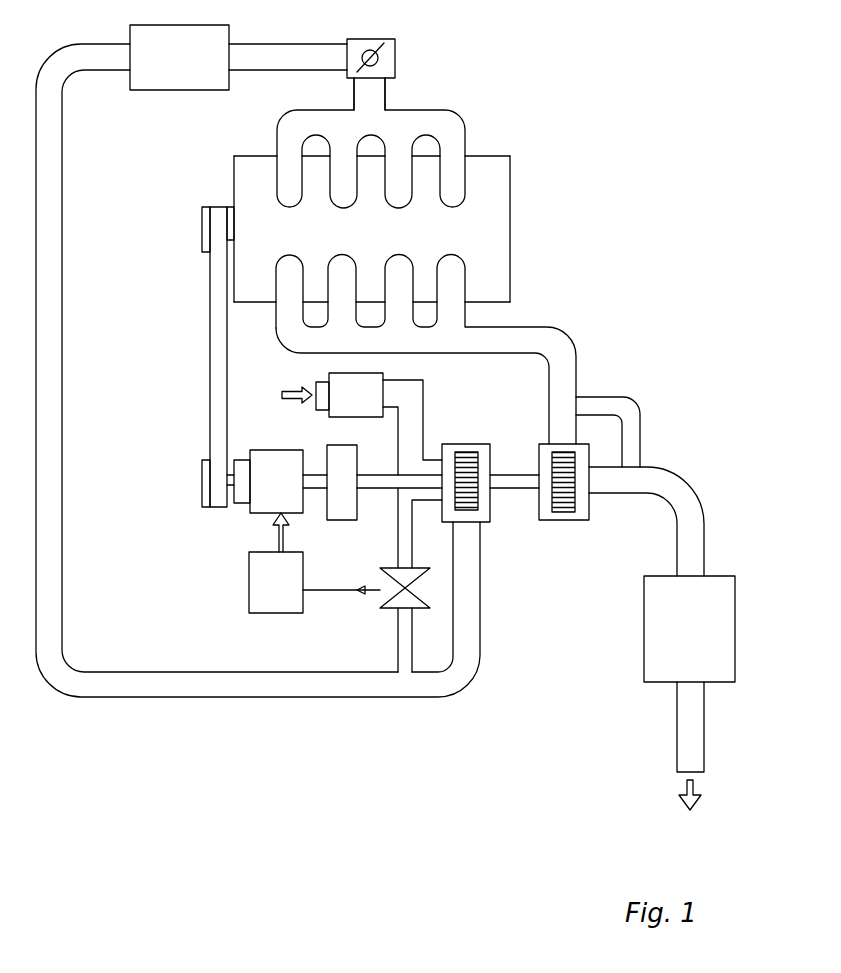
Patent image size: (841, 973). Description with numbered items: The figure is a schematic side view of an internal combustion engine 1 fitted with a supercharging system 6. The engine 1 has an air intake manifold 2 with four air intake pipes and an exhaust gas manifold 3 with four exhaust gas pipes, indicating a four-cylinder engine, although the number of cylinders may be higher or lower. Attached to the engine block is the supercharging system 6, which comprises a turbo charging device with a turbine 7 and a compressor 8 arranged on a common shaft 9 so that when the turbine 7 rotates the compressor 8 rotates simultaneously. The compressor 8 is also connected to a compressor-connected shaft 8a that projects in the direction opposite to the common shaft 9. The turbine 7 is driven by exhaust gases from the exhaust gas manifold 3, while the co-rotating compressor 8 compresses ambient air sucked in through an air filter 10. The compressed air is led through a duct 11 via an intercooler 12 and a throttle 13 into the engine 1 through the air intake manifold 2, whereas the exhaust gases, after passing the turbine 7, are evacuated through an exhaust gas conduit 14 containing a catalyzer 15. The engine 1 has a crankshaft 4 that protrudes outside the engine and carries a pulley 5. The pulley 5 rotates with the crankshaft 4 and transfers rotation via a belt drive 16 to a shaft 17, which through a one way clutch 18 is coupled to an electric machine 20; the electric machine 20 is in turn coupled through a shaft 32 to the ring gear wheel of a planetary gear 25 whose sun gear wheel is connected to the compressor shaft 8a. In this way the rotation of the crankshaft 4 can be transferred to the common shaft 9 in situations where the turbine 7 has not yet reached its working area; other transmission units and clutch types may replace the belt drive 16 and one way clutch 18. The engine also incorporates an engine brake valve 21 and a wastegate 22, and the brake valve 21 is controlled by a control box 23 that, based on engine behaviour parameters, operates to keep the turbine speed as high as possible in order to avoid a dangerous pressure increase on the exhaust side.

The internal combustion engine 1 is at (606, 118).
The air intake manifold 2 is at (453, 130).
The exhaust gas manifold 3 is at (457, 313).
The crankshaft 4 is at (228, 216).
The pulley 5 is at (202, 225).
The supercharging system 6 is at (539, 515).
The turbine 7 is at (584, 509).
The compressor 8 is at (485, 522).
The compressor-connected shaft 8a is at (378, 478).
The common shaft 9 is at (520, 477).
The air filter 10 is at (343, 410).
The duct 11 is at (50, 324).
The intercooler 12 is at (166, 70).
The throttle 13 is at (393, 62).
The exhaust gas conduit 14 is at (683, 735).
The catalyzer 15 is at (677, 646).
The belt drive 16 is at (213, 390).
The shaft 17 is at (202, 483).
The one way clutch 18 is at (243, 497).
The electric machine 20 is at (263, 496).
The engine brake valve 21 is at (412, 596).
The wastegate 22 is at (588, 406).
The control box 23 is at (263, 598).
The planetary gear 25 is at (341, 502).
The shaft 32 is at (318, 475).